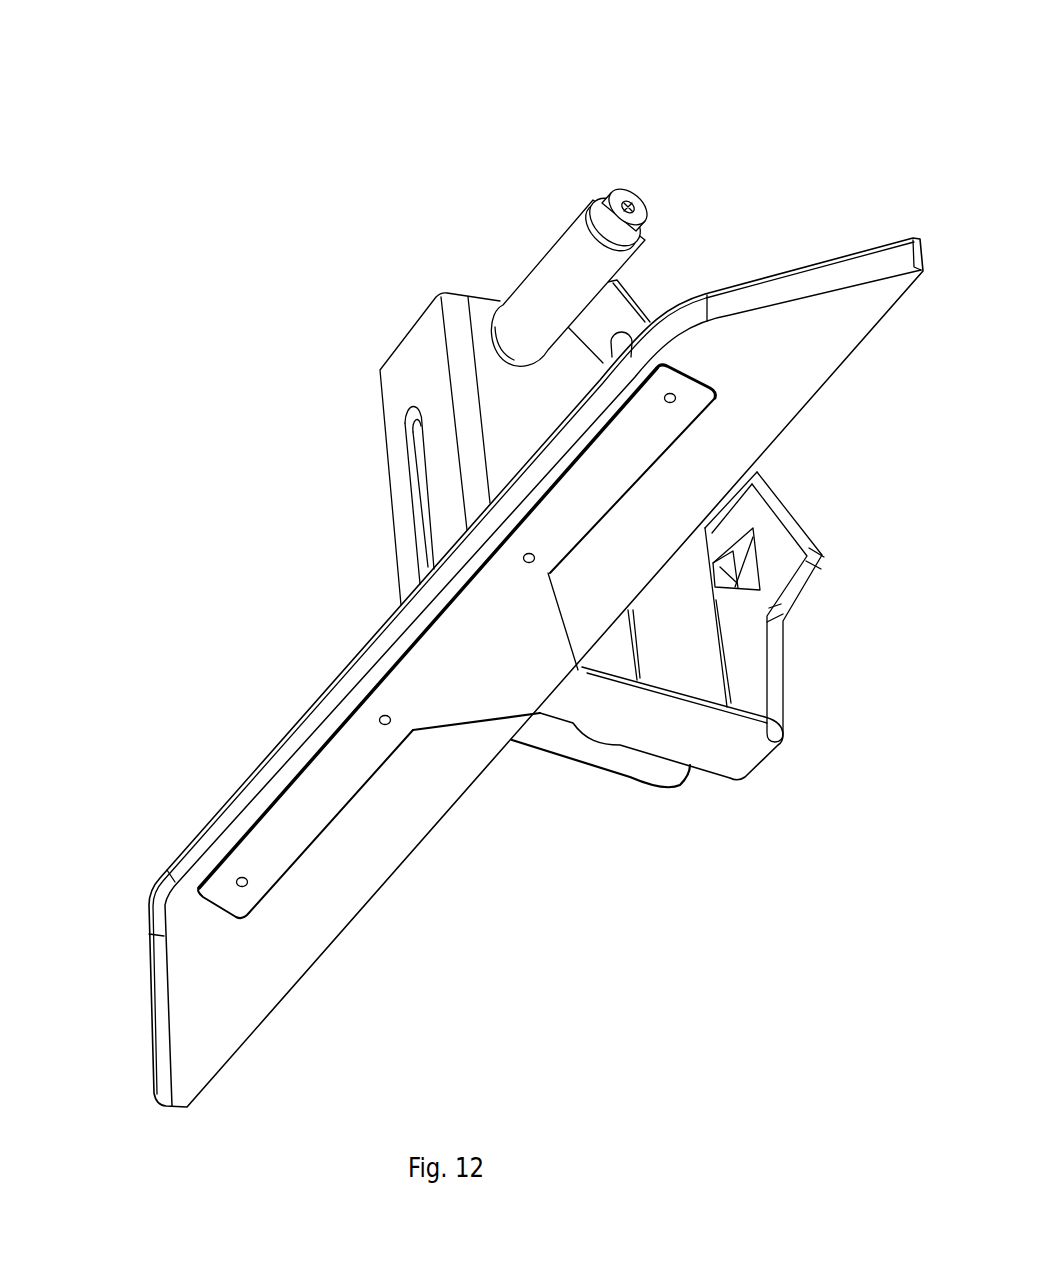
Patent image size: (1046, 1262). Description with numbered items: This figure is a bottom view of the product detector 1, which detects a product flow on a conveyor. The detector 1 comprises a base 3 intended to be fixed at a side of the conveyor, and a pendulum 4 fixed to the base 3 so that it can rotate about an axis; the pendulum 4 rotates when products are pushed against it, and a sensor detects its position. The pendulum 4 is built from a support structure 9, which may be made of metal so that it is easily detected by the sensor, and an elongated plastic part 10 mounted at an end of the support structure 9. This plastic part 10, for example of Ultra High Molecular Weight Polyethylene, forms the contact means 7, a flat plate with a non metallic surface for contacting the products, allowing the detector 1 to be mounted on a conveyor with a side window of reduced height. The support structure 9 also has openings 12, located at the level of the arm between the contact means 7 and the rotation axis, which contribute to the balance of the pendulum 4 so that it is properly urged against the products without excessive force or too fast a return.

The detector 1 is at (499, 555).
The base 3 is at (405, 378).
The pendulum 4 is at (815, 771).
The contact means 7 is at (236, 657).
The support structure 9 is at (716, 754).
The elongated plastic part 10 is at (194, 988).
The openings 12 is at (748, 564).